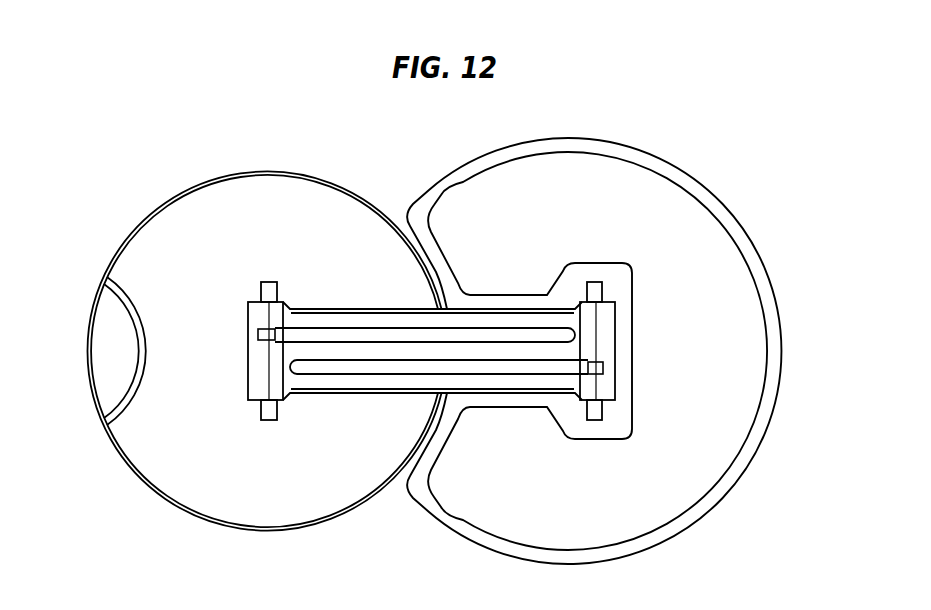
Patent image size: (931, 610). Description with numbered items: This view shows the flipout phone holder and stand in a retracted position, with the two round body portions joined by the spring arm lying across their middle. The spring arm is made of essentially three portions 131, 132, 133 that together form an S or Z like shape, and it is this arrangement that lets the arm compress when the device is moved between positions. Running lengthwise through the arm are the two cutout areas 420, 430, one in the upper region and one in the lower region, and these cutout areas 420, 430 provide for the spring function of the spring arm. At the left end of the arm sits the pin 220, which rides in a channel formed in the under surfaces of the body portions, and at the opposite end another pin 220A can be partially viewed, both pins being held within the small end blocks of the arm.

The first portion of the spring arm 131 is at (515, 320).
The second portion of the spring arm 132 is at (536, 352).
The third portion of the spring arm 133 is at (344, 382).
The cutout area 420 is at (372, 337).
The cutout area 430 is at (494, 368).
The pin 220 is at (258, 334).
The pin 220A is at (594, 366).